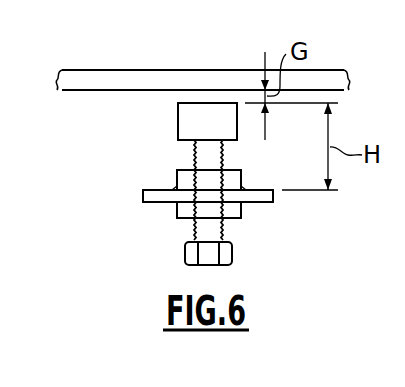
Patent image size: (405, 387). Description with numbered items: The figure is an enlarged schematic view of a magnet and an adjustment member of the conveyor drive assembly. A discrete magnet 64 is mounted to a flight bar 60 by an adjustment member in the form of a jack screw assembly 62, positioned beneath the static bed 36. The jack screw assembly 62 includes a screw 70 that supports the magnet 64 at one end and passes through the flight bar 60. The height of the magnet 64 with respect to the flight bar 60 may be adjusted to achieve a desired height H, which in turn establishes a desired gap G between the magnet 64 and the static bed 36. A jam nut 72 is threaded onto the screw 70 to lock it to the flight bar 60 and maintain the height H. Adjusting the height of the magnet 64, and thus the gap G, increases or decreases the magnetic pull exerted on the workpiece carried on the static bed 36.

The static bed 36 is at (116, 82).
The magnet 64 is at (190, 118).
The jack screw assembly 62 is at (146, 160).
The flight bar 60 is at (147, 197).
The jam nut 72 is at (237, 212).
The screw 70 is at (212, 230).